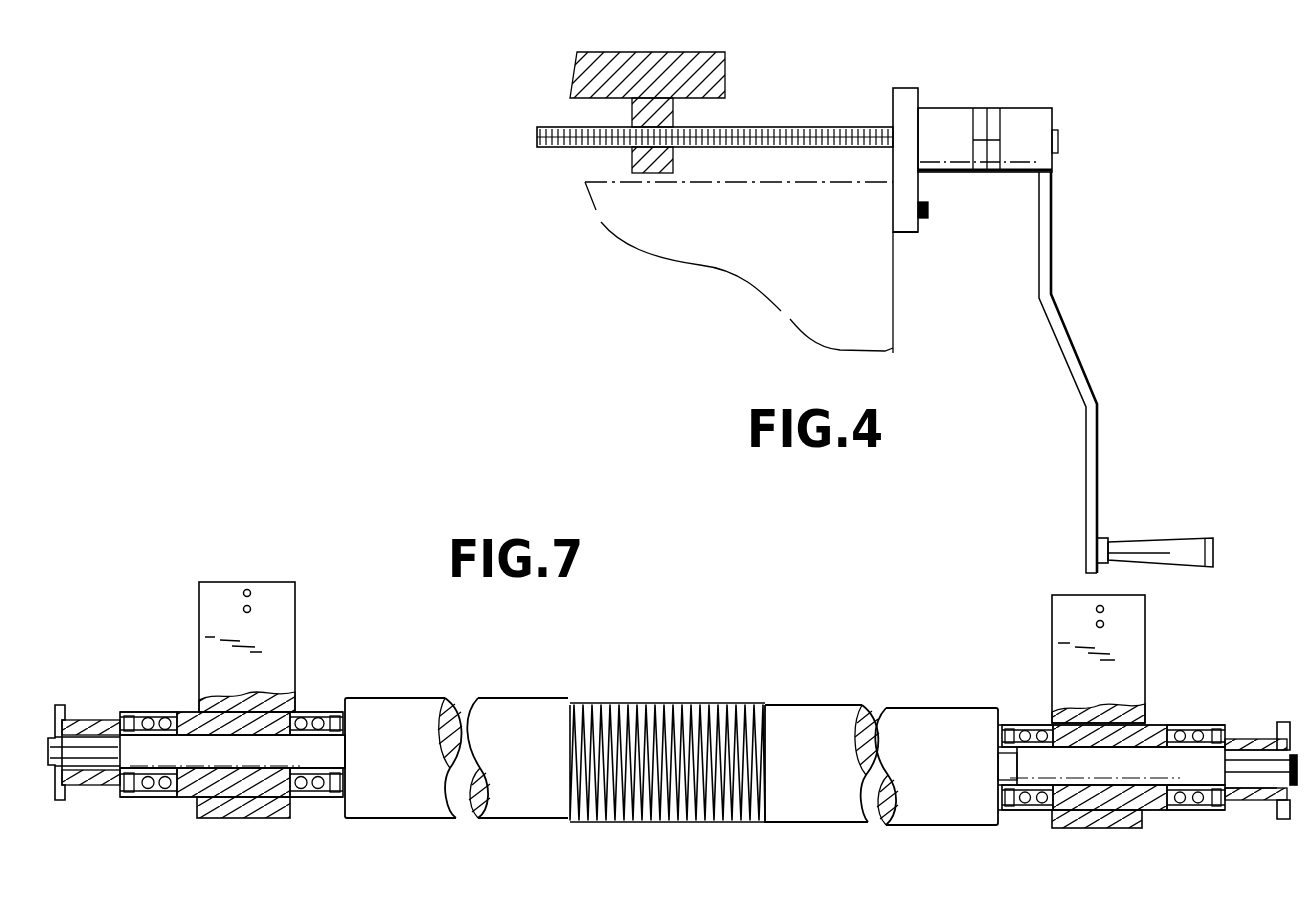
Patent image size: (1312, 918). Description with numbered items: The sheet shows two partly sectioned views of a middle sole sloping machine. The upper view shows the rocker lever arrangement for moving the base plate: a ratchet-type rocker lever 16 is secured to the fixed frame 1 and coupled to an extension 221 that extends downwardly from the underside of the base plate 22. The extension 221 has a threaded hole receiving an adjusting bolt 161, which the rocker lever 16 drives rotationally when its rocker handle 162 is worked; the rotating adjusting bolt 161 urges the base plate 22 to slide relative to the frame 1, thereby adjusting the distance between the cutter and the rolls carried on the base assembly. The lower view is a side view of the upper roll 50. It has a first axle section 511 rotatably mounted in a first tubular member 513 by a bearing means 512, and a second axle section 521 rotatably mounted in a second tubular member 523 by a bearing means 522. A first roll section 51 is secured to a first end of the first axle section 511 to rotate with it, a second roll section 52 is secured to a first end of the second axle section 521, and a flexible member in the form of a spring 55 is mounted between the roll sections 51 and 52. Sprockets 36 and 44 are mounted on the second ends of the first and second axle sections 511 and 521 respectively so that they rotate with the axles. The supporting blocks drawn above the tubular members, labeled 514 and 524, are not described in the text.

In FIG. 4, the frame 1 is at (753, 280).
In FIG. 4, the rocker lever 16 is at (1053, 330).
In FIG. 4, the adjusting bolt 161 is at (797, 149).
In FIG. 4, the rocker handle 162 is at (1170, 548).
In FIG. 4, the base plate 22 is at (684, 93).
In FIG. 4, the extension 221 is at (666, 120).
In FIG. 7, the sprocket 36 is at (96, 788).
In FIG. 7, the sprocket 44 is at (1250, 800).
In FIG. 7, the upper roll 50 is at (671, 725).
In FIG. 7, the first roll section 51 is at (535, 720).
In FIG. 7, the second roll section 52 is at (958, 718).
In FIG. 7, the spring 55 is at (677, 822).
In FIG. 7, the first axle section 511 is at (130, 748).
In FIG. 7, the bearing means 512 is at (166, 728).
In FIG. 7, the first tubular member 513 is at (188, 790).
In FIG. 7, the first support plate 514 is at (283, 624).
In FIG. 7, the second axle section 521 is at (1117, 770).
In FIG. 7, the bearing means 522 is at (1038, 810).
In FIG. 7, the second tubular member 523 is at (1160, 730).
In FIG. 7, the second support plate 524 is at (1135, 660).